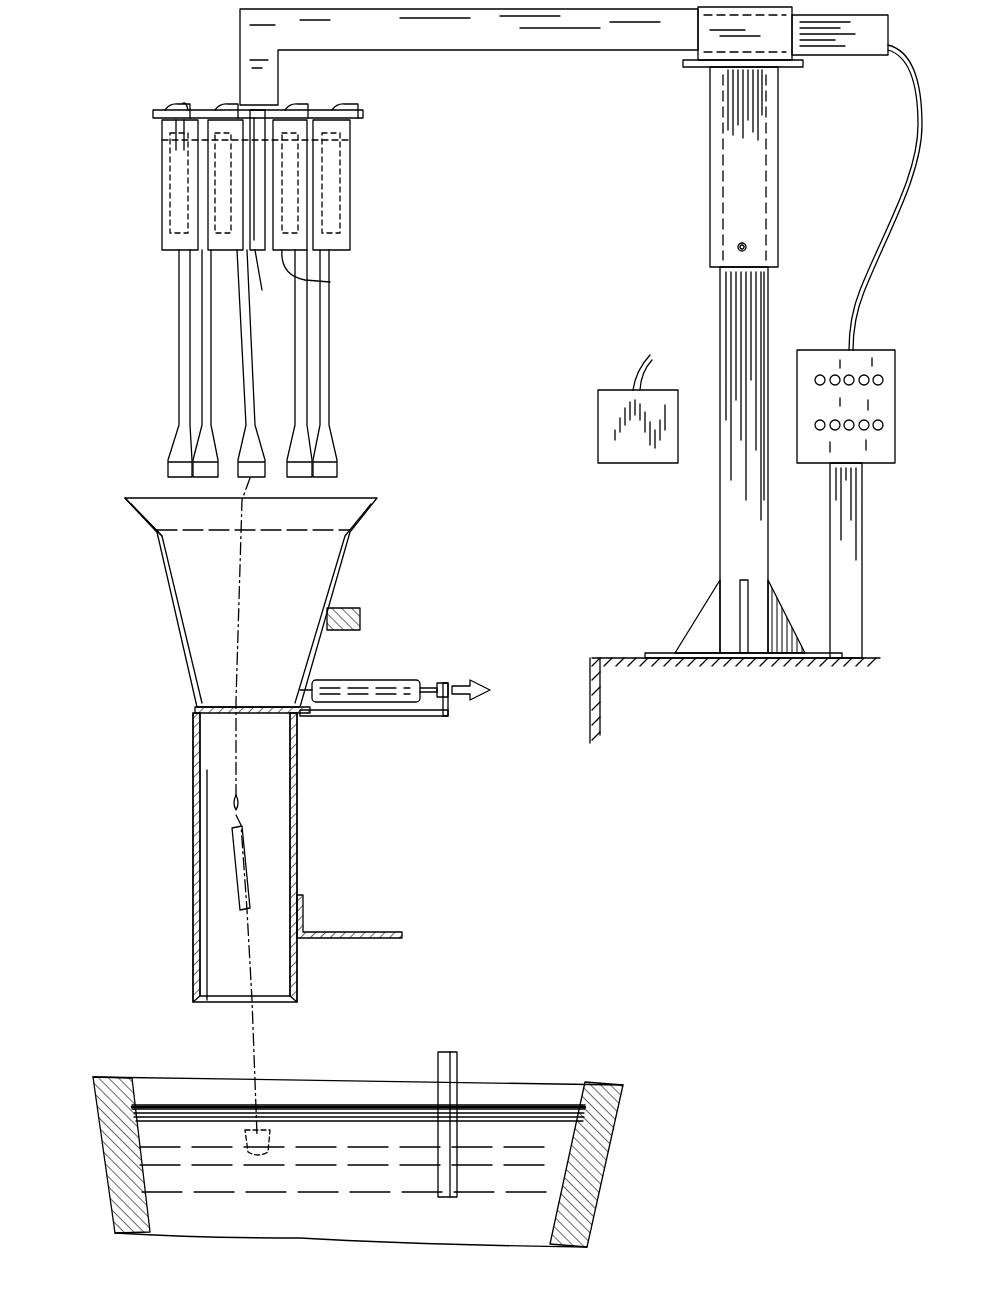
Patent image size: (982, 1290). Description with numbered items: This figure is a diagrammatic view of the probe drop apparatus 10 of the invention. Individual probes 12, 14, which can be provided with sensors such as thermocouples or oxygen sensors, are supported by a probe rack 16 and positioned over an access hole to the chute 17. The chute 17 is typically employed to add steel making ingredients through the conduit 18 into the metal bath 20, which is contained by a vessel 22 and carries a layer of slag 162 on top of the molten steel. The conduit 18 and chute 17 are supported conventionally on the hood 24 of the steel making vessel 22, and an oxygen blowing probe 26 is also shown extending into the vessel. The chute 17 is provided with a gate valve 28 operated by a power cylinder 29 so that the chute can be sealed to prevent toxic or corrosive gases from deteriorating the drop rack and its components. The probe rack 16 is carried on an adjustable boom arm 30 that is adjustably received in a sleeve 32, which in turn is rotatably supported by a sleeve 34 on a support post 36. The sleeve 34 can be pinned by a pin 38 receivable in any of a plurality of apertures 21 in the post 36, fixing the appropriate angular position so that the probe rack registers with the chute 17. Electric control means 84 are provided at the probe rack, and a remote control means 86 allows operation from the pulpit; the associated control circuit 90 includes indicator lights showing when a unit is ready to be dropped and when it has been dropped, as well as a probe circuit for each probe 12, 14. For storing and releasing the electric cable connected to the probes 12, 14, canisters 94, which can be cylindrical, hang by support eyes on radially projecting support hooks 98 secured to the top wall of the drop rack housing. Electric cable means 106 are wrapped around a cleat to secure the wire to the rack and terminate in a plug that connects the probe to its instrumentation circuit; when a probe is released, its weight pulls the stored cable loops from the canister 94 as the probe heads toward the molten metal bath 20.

The probe drop apparatus 10 is at (388, 228).
The probe 12 is at (330, 352).
The probe 14 is at (185, 336).
The probe rack 16 is at (264, 139).
The chute 17 is at (352, 540).
The conduit 18 is at (300, 816).
The metal bath 20 is at (350, 1135).
The apertures 21 is at (746, 246).
The vessel 22 is at (118, 1152).
The hood 24 is at (364, 932).
The oxygen blowing probe 26 is at (458, 1062).
The gate valve 28 is at (380, 716).
The power cylinder 29 is at (386, 680).
The adjustable boom arm 30 is at (540, 44).
The sleeve 32 is at (725, 42).
The sleeve 34 is at (710, 178).
The support post 36 is at (722, 302).
The pin 38 is at (740, 248).
The electric control means 84 is at (822, 350).
The remote control means 86 is at (668, 422).
The control circuit 90 is at (332, 110).
The canisters 94 is at (165, 192).
The support hook 98 is at (358, 110).
The electric cable means 106 is at (300, 270).
The layer of slag 162 is at (130, 1112).